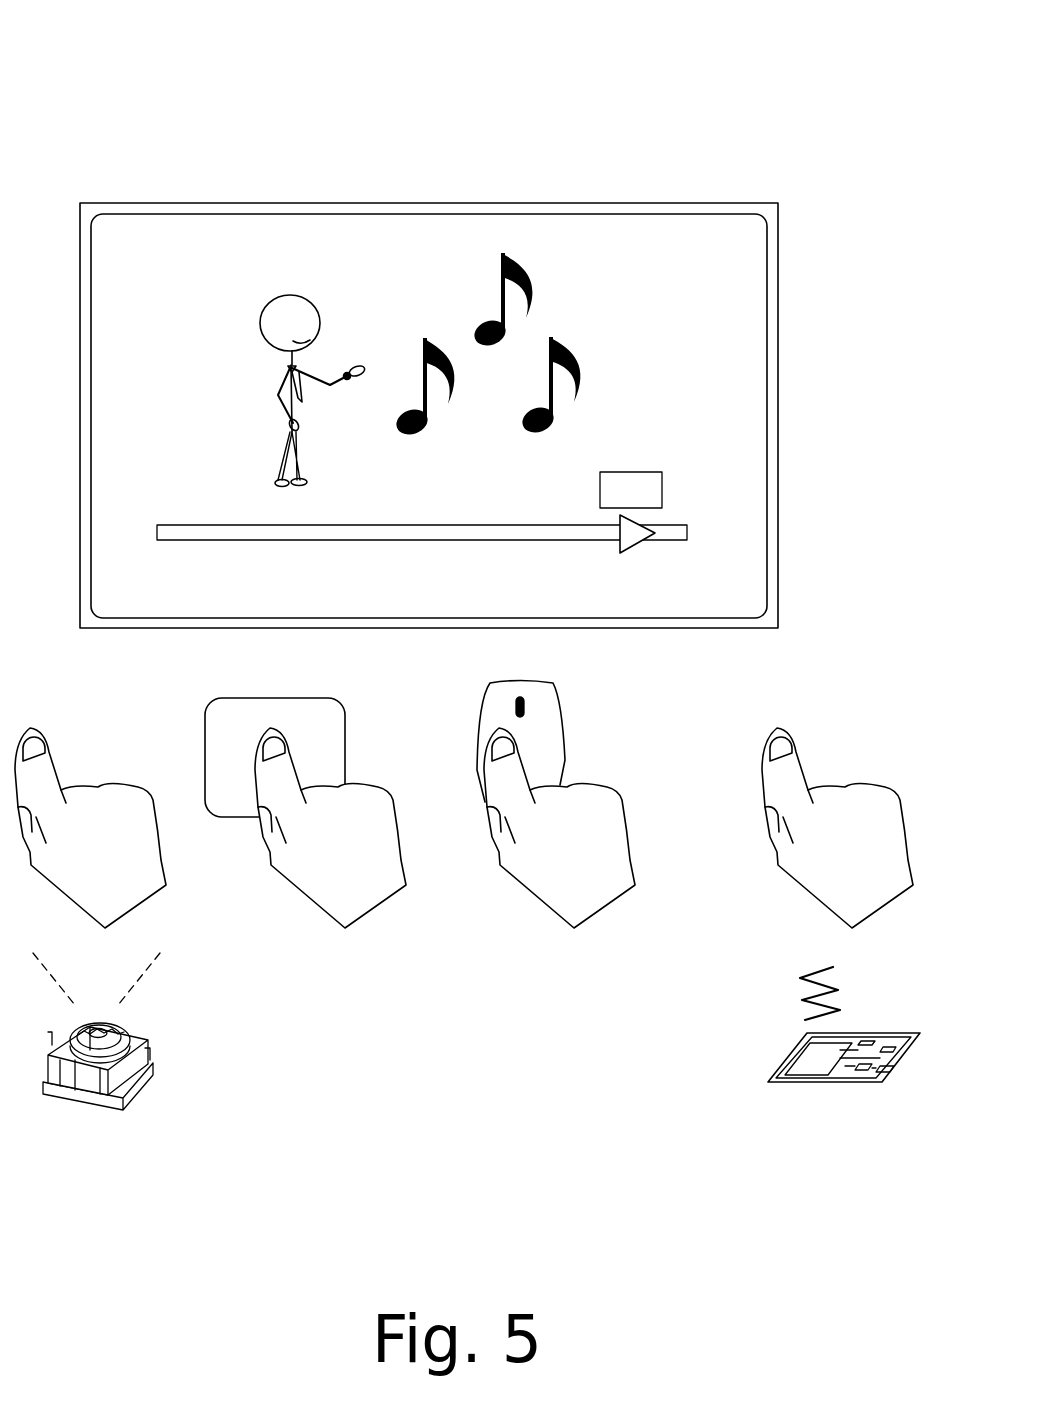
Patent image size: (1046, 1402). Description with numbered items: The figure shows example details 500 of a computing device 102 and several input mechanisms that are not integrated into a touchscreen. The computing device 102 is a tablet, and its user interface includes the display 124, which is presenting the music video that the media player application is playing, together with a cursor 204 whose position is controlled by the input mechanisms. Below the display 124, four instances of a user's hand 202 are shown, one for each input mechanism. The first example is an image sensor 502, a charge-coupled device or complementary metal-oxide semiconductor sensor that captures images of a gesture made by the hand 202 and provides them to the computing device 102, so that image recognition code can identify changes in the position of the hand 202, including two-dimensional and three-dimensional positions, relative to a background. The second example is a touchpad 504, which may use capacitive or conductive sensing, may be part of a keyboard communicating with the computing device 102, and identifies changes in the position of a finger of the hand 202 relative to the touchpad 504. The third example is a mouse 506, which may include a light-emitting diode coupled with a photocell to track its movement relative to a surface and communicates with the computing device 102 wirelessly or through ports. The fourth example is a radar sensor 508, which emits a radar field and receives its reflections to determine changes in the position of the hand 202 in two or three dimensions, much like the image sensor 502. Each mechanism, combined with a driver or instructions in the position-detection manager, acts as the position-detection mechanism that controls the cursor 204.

The example details 500 is at (136, 34).
The computing device 102 is at (787, 138).
The display 124 is at (440, 203).
The cursor 204 is at (632, 552).
The hand 202 is at (464, 828).
The touchpad 504 is at (341, 697).
The mouse 506 is at (558, 700).
The image sensor 502 is at (148, 1037).
The radar sensor 508 is at (800, 1047).